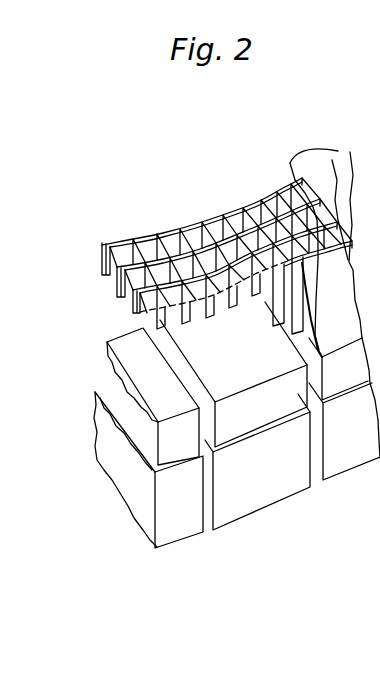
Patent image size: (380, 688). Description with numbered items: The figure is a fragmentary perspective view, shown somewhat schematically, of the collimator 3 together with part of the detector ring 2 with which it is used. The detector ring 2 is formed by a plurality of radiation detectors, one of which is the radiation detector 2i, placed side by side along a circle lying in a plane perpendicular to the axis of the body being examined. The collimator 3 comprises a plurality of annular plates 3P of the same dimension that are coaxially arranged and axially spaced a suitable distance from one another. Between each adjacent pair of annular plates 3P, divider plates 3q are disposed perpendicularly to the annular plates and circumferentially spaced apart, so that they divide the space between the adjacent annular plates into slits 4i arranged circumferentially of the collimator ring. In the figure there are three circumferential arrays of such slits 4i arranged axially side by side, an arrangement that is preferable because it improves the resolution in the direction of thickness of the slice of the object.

The detector ring 2 is at (237, 392).
The radiation detector 2i is at (262, 503).
The collimator 3 is at (206, 218).
The annular plate 3P is at (331, 148).
The divider plate 3q is at (137, 305).
The slit 4i is at (175, 238).